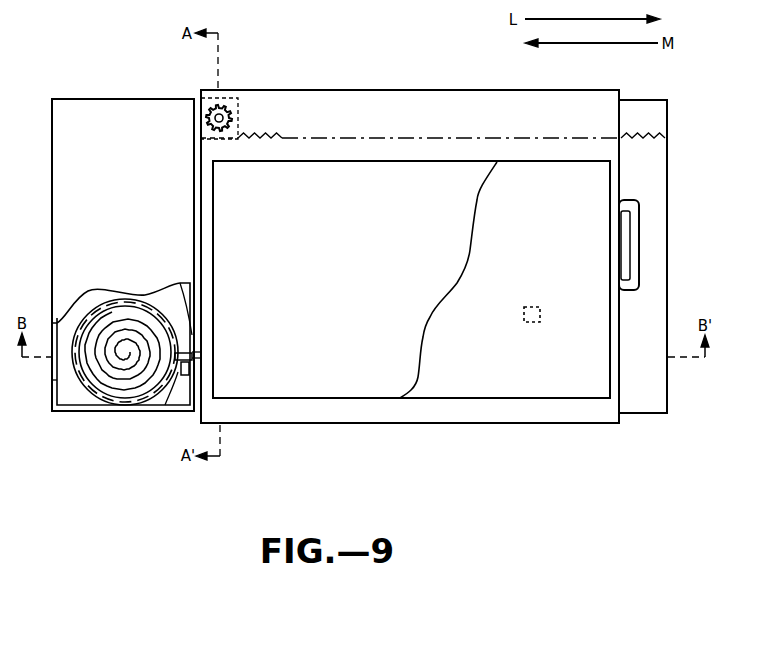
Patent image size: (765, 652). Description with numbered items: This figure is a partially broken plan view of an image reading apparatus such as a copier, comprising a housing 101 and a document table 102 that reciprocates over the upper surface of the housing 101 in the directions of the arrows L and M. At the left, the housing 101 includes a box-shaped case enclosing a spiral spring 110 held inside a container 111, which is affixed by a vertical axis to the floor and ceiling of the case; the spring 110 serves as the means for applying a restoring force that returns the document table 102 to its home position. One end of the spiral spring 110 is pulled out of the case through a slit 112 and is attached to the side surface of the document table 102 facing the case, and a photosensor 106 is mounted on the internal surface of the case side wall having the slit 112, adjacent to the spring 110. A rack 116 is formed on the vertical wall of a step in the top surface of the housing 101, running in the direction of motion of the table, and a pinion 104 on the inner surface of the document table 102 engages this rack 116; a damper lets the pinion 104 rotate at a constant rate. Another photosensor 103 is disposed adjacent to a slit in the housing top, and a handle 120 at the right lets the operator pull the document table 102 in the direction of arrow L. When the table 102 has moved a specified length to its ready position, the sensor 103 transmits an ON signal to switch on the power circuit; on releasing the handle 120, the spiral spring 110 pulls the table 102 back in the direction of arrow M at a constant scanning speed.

The housing 101 is at (85, 99).
The document table 102 is at (452, 90).
The photosensor 103 is at (540, 322).
The pinion 104 is at (226, 106).
The photosensor 106 is at (165, 400).
The spiral spring 110 is at (190, 368).
The container 111 is at (88, 392).
The slit 112 is at (166, 286).
The rack 116 is at (288, 135).
The handle 120 is at (639, 262).